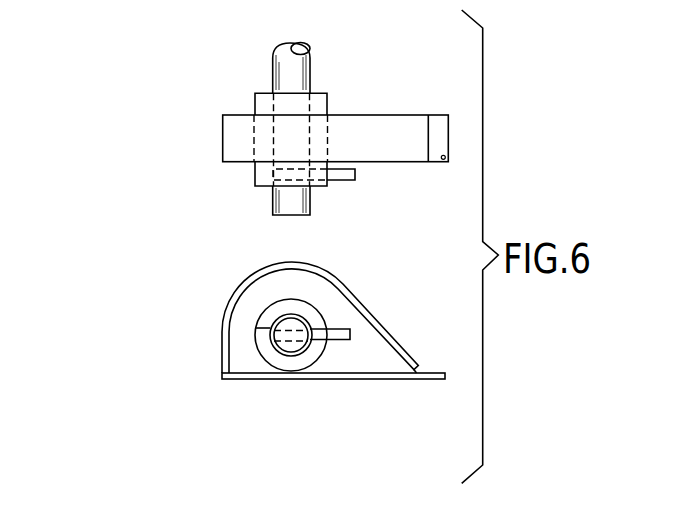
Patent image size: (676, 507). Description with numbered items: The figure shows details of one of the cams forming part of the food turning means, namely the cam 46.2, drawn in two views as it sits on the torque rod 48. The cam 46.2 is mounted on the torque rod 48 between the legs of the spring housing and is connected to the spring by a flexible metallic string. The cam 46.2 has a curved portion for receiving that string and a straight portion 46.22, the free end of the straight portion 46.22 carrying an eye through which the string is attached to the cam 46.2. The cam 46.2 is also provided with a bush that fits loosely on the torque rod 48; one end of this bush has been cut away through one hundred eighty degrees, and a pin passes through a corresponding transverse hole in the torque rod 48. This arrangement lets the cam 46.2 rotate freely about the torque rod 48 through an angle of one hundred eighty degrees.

The cam 46.2 is at (104, 126).
The straight portion 46.22 is at (413, 383).
The torque rod 48 is at (305, 65).